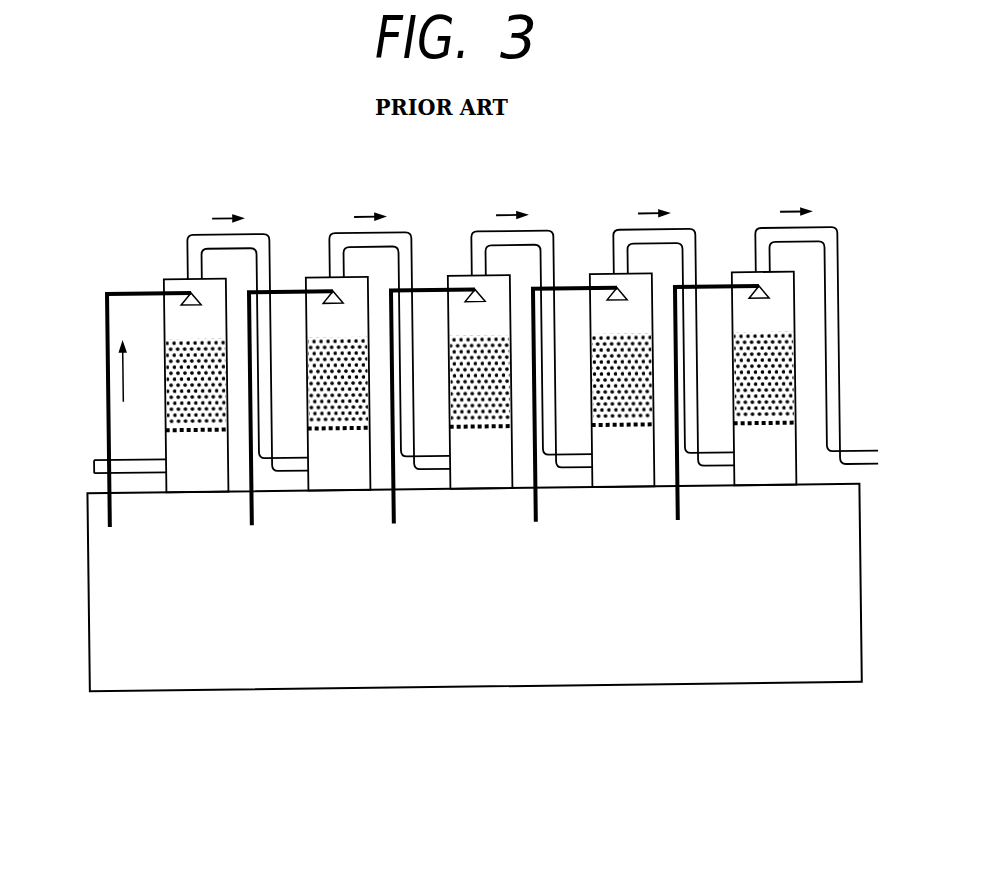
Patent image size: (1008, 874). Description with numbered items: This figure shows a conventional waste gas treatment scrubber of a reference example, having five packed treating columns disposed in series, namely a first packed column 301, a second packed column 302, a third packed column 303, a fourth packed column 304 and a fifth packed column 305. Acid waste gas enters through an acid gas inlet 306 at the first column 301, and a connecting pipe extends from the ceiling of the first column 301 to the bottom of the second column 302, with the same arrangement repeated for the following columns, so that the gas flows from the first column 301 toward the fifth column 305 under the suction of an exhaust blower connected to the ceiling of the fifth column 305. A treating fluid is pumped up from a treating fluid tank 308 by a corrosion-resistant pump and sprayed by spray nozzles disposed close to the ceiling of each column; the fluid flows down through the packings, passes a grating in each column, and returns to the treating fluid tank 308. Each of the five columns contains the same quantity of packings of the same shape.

The first packed column 301 is at (178, 280).
The second packed column 302 is at (320, 280).
The third packed column 303 is at (462, 280).
The fourth packed column 304 is at (604, 280).
The fifth packed column 305 is at (746, 280).
The acid gas inlet 306 is at (92, 465).
The treating fluid tank 308 is at (775, 692).